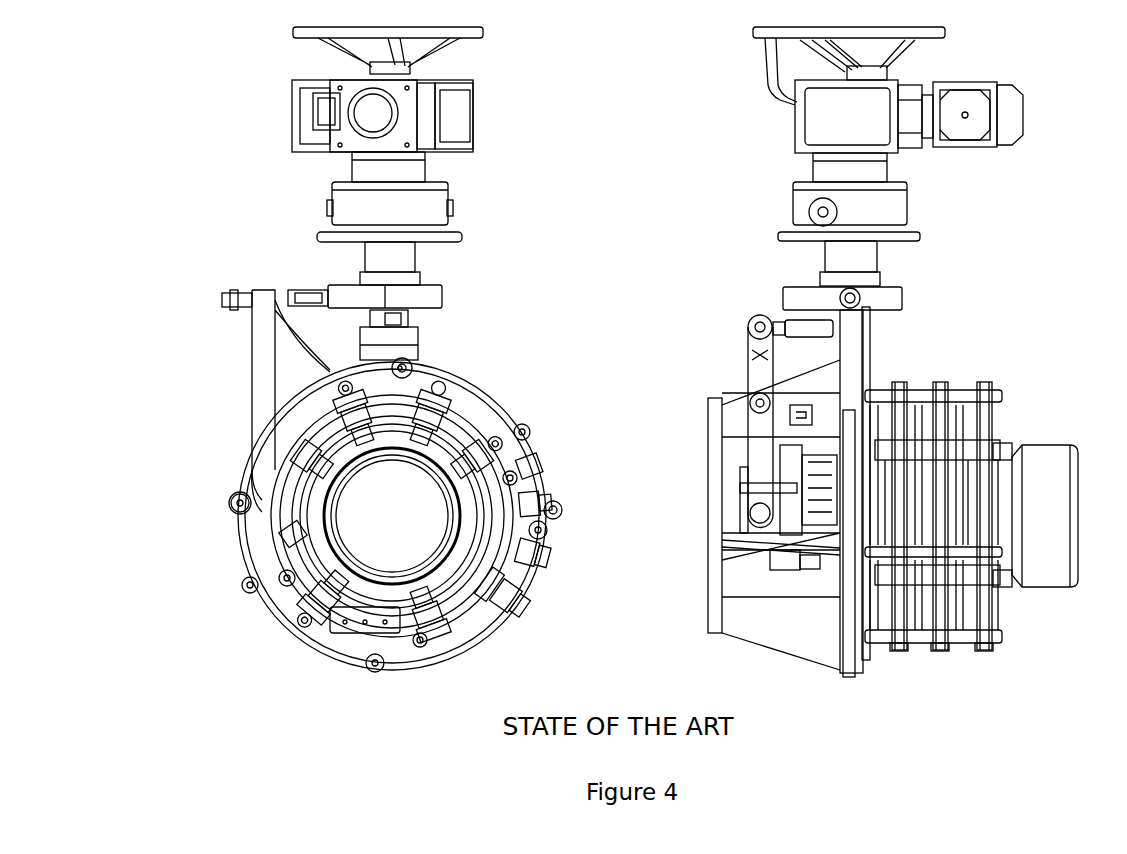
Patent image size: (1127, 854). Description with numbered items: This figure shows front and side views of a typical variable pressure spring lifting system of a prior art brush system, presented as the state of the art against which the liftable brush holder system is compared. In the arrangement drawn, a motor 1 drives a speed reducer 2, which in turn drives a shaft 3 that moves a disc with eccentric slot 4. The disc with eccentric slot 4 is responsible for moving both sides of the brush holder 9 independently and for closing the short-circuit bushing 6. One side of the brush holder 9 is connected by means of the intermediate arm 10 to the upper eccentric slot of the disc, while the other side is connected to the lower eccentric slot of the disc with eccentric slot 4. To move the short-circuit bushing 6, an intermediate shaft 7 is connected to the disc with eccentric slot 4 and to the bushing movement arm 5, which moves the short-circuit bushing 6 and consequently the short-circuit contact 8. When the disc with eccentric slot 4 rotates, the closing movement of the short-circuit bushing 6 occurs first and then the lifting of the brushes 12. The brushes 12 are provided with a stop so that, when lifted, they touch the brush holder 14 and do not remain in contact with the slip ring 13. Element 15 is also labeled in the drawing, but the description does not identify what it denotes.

The motor 1 is at (1023, 108).
The speed reducer 2 is at (820, 115).
The shaft 3 is at (830, 268).
The disc with eccentric slot 4 is at (900, 300).
The bushing movement arm 5 is at (755, 380).
The short-circuit bushing 6 is at (740, 485).
The intermediate shaft 7 is at (767, 317).
The short-circuit contact 8 is at (743, 557).
The brush holder 9 is at (307, 495).
The intermediate arm 10 is at (262, 343).
The brushes 12 is at (283, 521).
The slip ring 13 is at (1018, 448).
The brush holder 14 is at (290, 535).
The pivot 15 is at (287, 578).